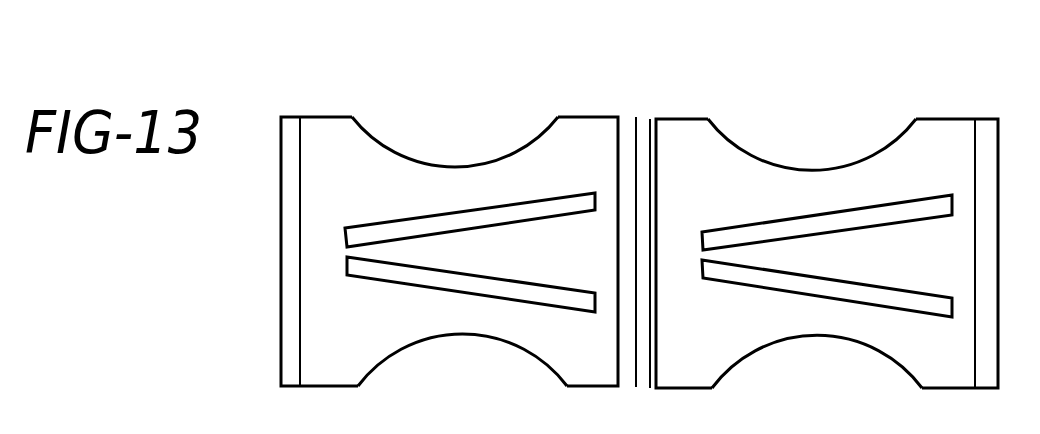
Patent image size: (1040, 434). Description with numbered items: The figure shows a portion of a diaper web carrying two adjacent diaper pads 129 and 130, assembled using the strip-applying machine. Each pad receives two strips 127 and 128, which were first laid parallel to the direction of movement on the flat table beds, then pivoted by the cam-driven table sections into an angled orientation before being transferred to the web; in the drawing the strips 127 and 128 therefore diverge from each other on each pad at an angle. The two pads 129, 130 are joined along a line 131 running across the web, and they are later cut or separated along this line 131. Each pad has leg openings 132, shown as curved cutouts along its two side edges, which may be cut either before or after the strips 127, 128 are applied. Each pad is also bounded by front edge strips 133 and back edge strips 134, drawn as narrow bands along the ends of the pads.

The strip 127 is at (546, 207).
The strip 128 is at (560, 300).
The diaper pad 129 is at (420, 116).
The diaper pad 130 is at (794, 112).
The line 131 is at (633, 165).
The leg opening 132 is at (457, 165).
The front edge strip 133 is at (627, 117).
The back edge strip 134 is at (291, 117).